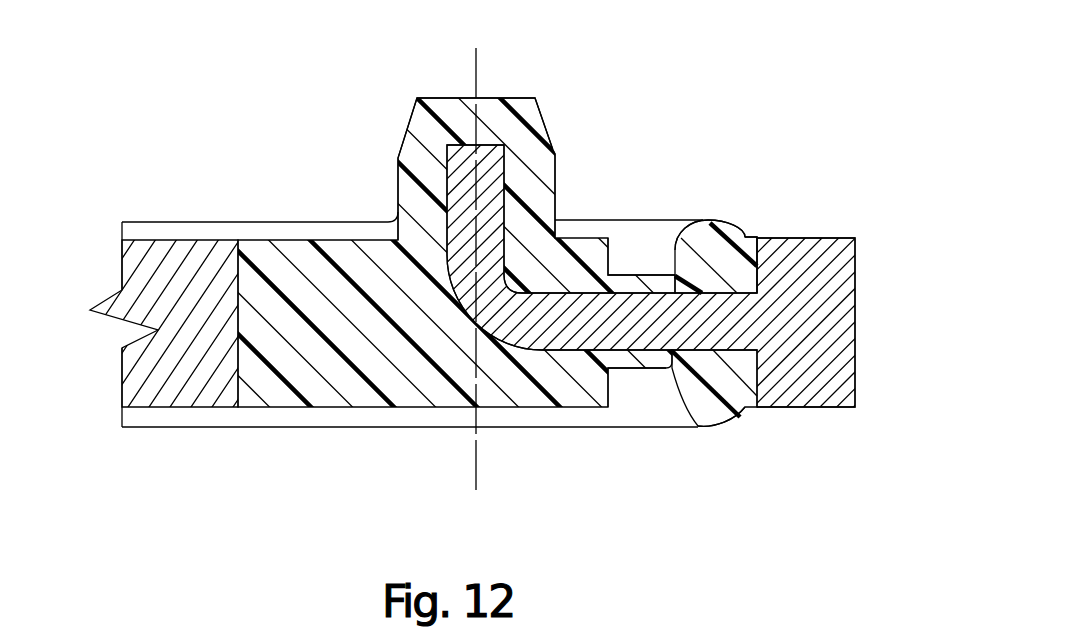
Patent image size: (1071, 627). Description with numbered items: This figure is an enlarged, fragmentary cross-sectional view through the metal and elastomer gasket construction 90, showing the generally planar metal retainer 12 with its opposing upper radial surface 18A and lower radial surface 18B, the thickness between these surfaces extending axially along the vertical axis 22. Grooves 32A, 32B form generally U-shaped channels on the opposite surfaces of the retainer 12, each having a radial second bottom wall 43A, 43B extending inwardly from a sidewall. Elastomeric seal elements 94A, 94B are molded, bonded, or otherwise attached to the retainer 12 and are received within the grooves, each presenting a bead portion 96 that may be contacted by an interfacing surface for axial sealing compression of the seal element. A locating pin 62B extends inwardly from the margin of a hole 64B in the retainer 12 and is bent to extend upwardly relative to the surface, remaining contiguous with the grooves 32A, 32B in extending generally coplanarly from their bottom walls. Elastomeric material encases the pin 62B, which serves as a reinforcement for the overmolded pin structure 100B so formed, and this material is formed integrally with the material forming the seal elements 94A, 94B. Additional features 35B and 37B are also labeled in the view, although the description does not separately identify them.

The retainer 12 is at (122, 383).
The upper radial surface 18A is at (842, 237).
The lower radial surface 18B is at (847, 415).
The vertical axis 22 is at (475, 68).
The groove 32A is at (654, 264).
The groove 32B is at (666, 388).
The shoulder 35B is at (747, 237).
The lower dome surface 37B is at (742, 413).
The second bottom wall 43A is at (637, 270).
The second bottom wall 43B is at (620, 369).
The locating pin 62B is at (468, 143).
The hole 64B is at (302, 238).
The gasket construction 90 is at (816, 101).
The seal element 94A is at (632, 221).
The seal element 94B is at (534, 428).
The bead portion 96 is at (716, 221).
The pin structure 100B is at (552, 139).